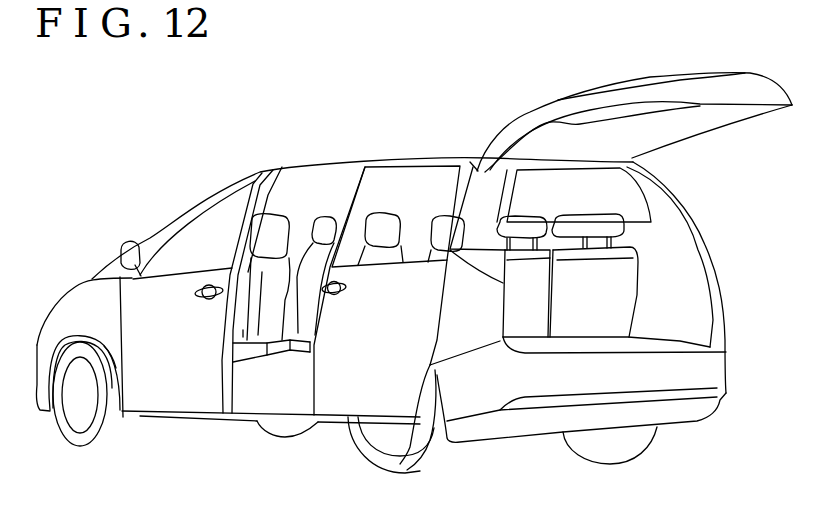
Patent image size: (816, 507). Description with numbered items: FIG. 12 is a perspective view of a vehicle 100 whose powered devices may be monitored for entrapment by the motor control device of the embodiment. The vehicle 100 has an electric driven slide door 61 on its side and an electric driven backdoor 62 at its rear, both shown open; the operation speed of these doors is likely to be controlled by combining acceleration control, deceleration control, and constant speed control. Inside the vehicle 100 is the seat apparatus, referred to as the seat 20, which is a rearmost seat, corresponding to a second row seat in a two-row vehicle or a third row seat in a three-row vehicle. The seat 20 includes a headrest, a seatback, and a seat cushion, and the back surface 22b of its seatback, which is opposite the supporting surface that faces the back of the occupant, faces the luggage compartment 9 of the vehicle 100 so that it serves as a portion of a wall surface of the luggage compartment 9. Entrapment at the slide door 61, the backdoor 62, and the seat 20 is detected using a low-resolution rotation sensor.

The vehicle 100 is at (405, 87).
The electric driven backdoor 62 is at (672, 73).
The electric driven slide door 61 is at (340, 408).
The seat apparatus 20 is at (635, 241).
The back surface 22b is at (617, 266).
The luggage compartment 9 is at (633, 347).